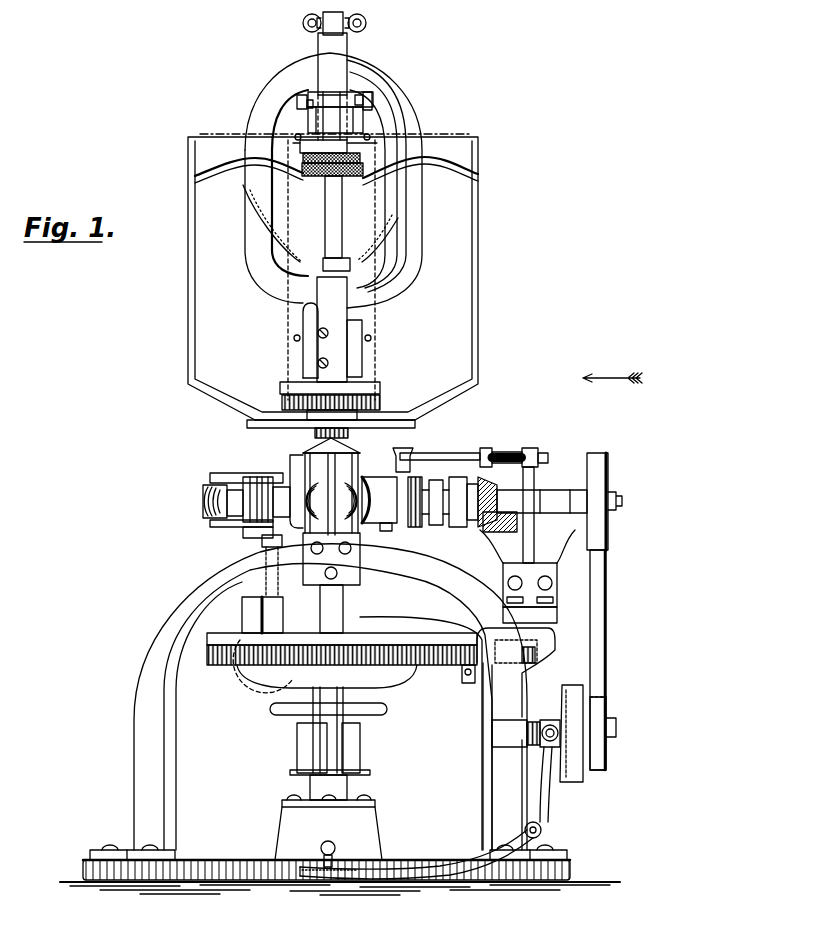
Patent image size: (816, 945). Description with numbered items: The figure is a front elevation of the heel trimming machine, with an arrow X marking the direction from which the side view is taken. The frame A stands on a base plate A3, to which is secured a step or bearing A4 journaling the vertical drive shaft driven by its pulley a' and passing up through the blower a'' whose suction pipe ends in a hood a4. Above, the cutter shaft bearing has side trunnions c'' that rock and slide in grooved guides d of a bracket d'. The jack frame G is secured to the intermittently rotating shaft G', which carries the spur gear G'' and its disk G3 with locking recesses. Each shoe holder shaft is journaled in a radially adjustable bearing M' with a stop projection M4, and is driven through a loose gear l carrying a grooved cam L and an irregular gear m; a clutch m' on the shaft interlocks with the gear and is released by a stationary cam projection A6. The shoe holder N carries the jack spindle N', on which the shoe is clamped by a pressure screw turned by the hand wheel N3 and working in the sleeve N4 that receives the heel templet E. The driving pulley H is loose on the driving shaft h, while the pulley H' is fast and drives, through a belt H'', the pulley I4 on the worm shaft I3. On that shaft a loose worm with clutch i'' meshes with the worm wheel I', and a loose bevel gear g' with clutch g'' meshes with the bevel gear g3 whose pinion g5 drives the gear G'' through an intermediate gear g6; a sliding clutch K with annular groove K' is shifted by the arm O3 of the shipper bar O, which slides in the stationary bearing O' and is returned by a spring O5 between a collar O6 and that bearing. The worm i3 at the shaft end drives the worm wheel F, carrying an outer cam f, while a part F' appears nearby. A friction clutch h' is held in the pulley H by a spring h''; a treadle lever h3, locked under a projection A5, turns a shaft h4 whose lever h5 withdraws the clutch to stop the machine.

The hand wheel N3 is at (367, 25).
The side trunnions c'' is at (277, 87).
The grooved guides d is at (366, 102).
The shoe holder N is at (333, 180).
The bracket d' is at (324, 120).
The internally screw threaded sleeve N4 is at (410, 120).
The heel templet E is at (368, 150).
The jack spindle N' is at (342, 223).
The hood a4 is at (333, 278).
The stop projection M4 is at (303, 312).
The bearing M' is at (367, 329).
The jack frame G is at (354, 348).
The loose gear l is at (283, 398).
The grooved cam L is at (380, 387).
The irregular gear m is at (366, 399).
The worm i3 is at (258, 477).
The clutch m' is at (307, 438).
The stationary cam projection A6 is at (325, 511).
The arm or projection O3 is at (412, 451).
The shipper bar O is at (440, 444).
The collar O6 is at (486, 448).
The spring O5 is at (509, 452).
The stationary bearing O' is at (542, 493).
The outer cam f is at (212, 479).
The worm wheel F is at (206, 501).
The bracket F' is at (234, 580).
The clutch i'' is at (379, 500).
The worm wheel I' is at (381, 540).
The annular groove K' is at (413, 519).
The sliding clutch K is at (432, 521).
The clutch g'' is at (460, 519).
The bevel gear g' is at (498, 496).
The bevel gear g3 is at (495, 532).
The pulley I4 is at (610, 463).
The worm shaft I3 is at (623, 500).
The belt H'' is at (616, 660).
The disk G3 is at (216, 640).
The spur gear G'' is at (337, 671).
The blower a'' is at (325, 666).
The pinion g5 is at (542, 655).
The intermediate gear g6 is at (465, 672).
The driving pulley H is at (571, 716).
The friction clutch h' is at (550, 716).
The pulley H' is at (616, 732).
The driving shaft h is at (625, 730).
The frame A is at (344, 697).
The jack frame shaft G' is at (294, 748).
The pulley a' is at (368, 748).
The step or bearing A4 is at (350, 790).
The spring h'' is at (516, 751).
The lever h5 is at (548, 804).
The shaft h4 is at (542, 832).
The projection A5 is at (336, 856).
The base plate A3 is at (340, 870).
The treadle lever h3 is at (414, 878).
The viewing direction X is at (647, 387).